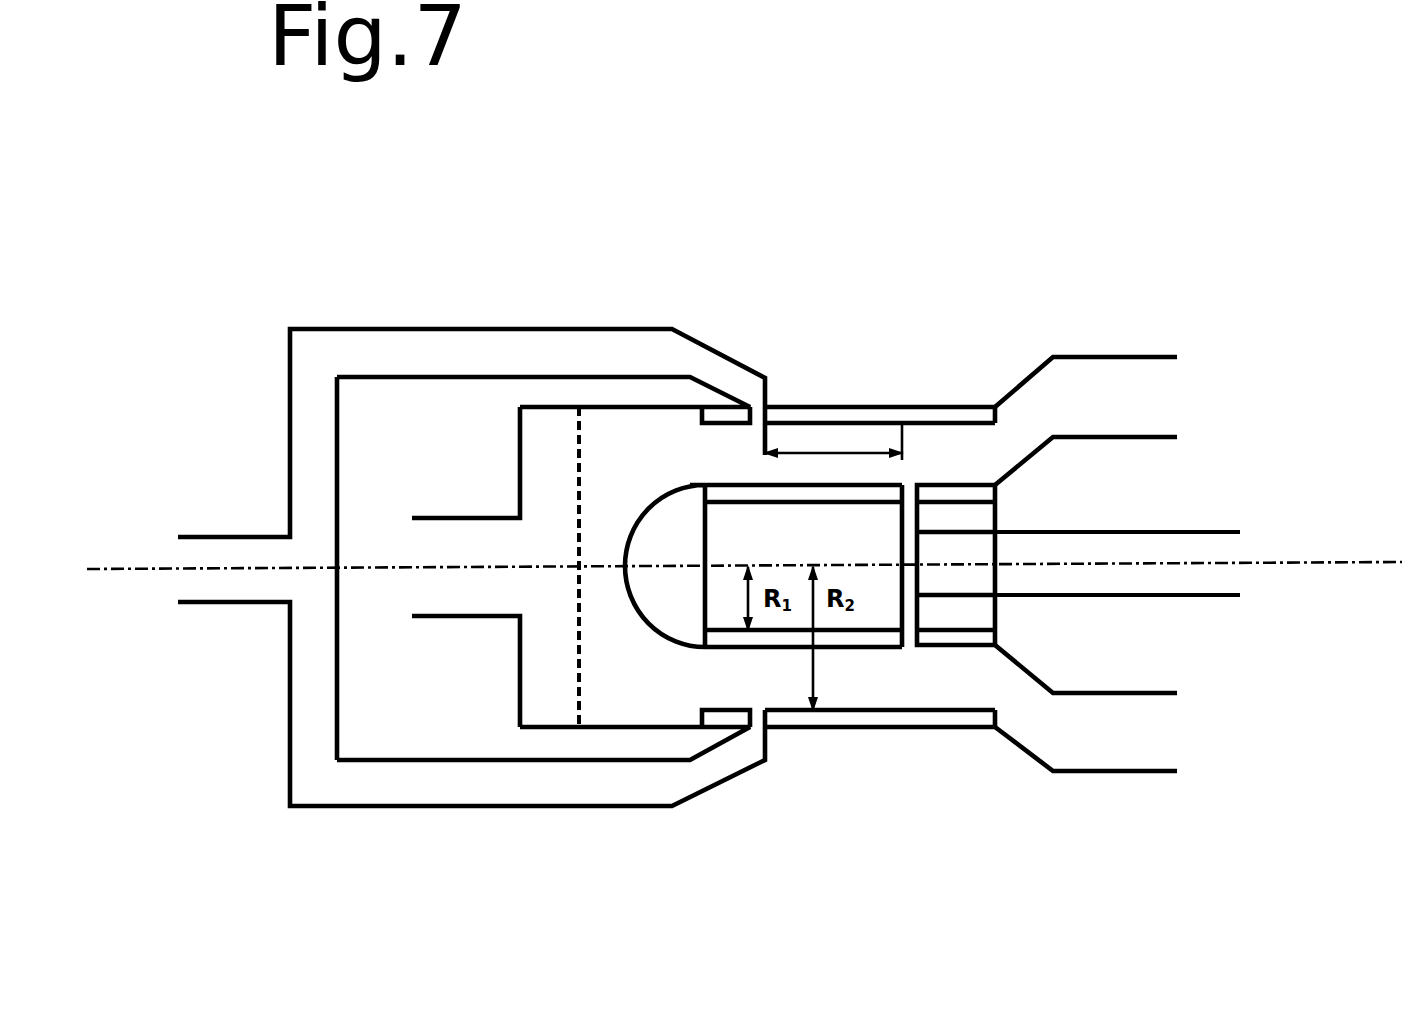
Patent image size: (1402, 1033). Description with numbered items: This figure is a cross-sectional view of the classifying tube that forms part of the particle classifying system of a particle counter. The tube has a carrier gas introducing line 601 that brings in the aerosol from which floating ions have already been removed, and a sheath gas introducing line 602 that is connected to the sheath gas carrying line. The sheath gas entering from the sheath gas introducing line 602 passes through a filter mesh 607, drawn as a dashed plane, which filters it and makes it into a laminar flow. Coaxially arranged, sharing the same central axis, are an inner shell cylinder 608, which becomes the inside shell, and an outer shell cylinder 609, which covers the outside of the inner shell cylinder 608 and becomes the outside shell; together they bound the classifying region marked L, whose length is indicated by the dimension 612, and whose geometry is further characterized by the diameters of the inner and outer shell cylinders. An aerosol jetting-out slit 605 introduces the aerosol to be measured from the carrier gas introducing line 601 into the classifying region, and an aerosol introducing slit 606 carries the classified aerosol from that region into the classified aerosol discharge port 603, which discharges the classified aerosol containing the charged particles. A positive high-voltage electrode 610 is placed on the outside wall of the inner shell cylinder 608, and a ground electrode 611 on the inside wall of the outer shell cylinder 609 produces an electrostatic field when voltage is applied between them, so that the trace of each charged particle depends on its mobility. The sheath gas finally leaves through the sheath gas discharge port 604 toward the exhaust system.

The carrier gas introducing line 601 is at (471, 542).
The sheath gas introducing line 602 is at (466, 567).
The classified aerosol discharge port 603 is at (1117, 535).
The sheath gas discharge port 604 is at (1086, 393).
The aerosol jetting-out slit 605 is at (760, 405).
The aerosol introducing slit 606 is at (908, 485).
The filter mesh 607 is at (565, 664).
The inner shell cylinder 608 is at (682, 487).
The outer shell cylinder 609 is at (625, 408).
The positive high-voltage electrode 610 is at (950, 647).
The ground electrode 611 is at (888, 728).
The dimension L 612 is at (828, 453).